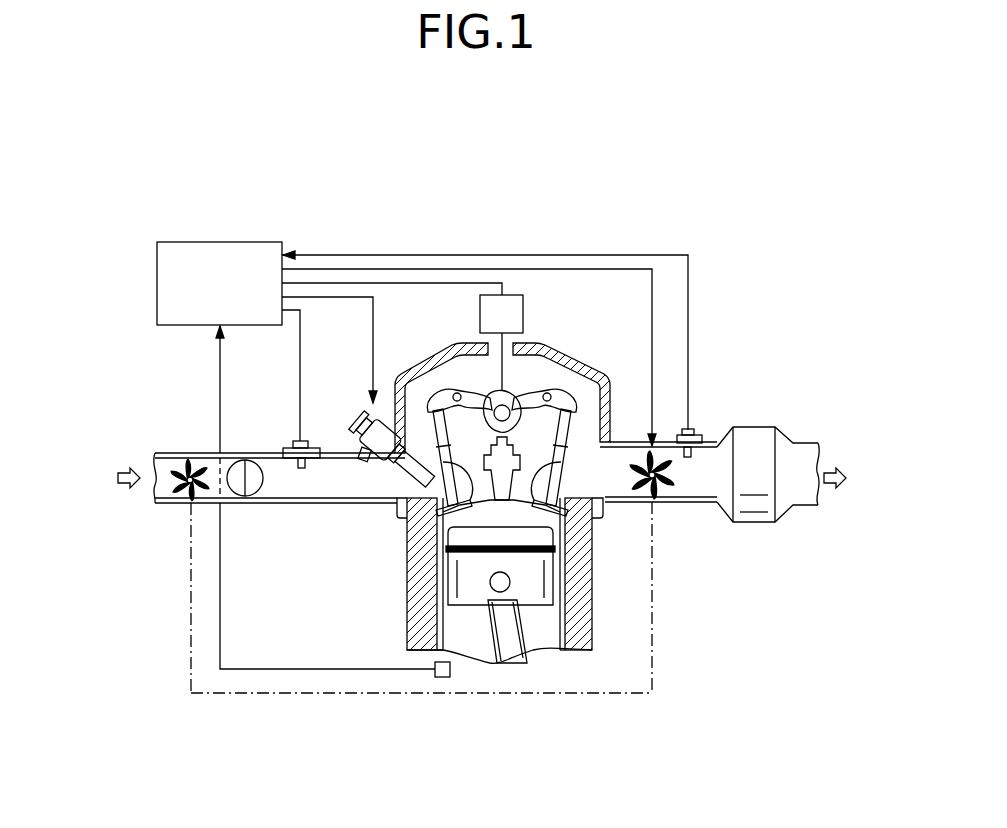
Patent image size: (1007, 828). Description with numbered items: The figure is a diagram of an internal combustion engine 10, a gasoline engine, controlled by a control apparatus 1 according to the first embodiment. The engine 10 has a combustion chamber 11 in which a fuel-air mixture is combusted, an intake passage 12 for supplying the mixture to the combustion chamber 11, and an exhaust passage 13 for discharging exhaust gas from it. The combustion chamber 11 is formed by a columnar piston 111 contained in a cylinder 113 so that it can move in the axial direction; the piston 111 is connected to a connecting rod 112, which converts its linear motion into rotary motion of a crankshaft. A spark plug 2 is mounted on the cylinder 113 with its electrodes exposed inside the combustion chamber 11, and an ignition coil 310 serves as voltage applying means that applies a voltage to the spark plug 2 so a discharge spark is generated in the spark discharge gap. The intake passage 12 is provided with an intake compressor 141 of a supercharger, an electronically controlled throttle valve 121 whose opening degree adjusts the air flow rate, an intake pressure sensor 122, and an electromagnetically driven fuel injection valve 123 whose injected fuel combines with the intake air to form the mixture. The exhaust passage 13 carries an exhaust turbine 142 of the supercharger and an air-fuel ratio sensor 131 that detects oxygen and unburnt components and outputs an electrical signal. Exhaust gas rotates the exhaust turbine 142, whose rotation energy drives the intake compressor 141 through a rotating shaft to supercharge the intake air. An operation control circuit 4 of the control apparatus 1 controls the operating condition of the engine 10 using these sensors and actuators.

The control apparatus 1 is at (202, 202).
The internal combustion engine 10 is at (643, 237).
The combustion chamber 11 is at (553, 628).
The piston 111 is at (462, 583).
The connecting rod 112 is at (510, 638).
The cylinder 113 is at (580, 572).
The intake passage 12 is at (283, 501).
The throttle valve 121 is at (237, 486).
The intake pressure sensor 122 is at (263, 462).
The fuel injection valve 123 is at (386, 428).
The exhaust passage 13 is at (735, 428).
The air-fuel ratio sensor 131 is at (690, 430).
The intake compressor 141 is at (186, 492).
The exhaust turbine 142 is at (653, 440).
The spark plug 2 is at (517, 452).
The ignition coil 310 is at (515, 308).
The operation control circuit 4 is at (248, 238).